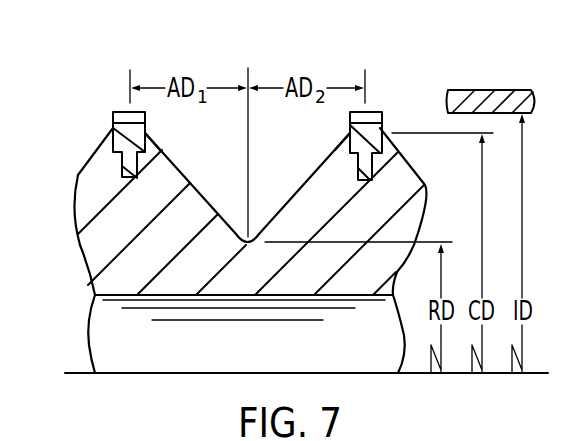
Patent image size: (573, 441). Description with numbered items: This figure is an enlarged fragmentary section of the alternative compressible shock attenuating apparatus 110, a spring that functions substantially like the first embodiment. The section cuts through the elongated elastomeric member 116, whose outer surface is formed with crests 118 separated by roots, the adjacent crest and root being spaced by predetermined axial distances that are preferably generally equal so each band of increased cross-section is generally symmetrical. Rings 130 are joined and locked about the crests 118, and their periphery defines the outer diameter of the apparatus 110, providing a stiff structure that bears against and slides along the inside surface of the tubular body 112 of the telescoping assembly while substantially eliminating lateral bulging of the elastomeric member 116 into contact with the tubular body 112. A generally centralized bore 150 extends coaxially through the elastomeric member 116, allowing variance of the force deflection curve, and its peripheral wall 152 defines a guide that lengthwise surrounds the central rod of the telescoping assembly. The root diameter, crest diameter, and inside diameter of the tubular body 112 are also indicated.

The shock attenuating apparatus 110 is at (390, 92).
The tubular body 112 is at (498, 90).
The elastomeric member 116 is at (214, 192).
The crests 118 is at (159, 148).
The rings 130 is at (92, 128).
The bore 150 is at (363, 296).
The peripheral wall 152 is at (145, 297).